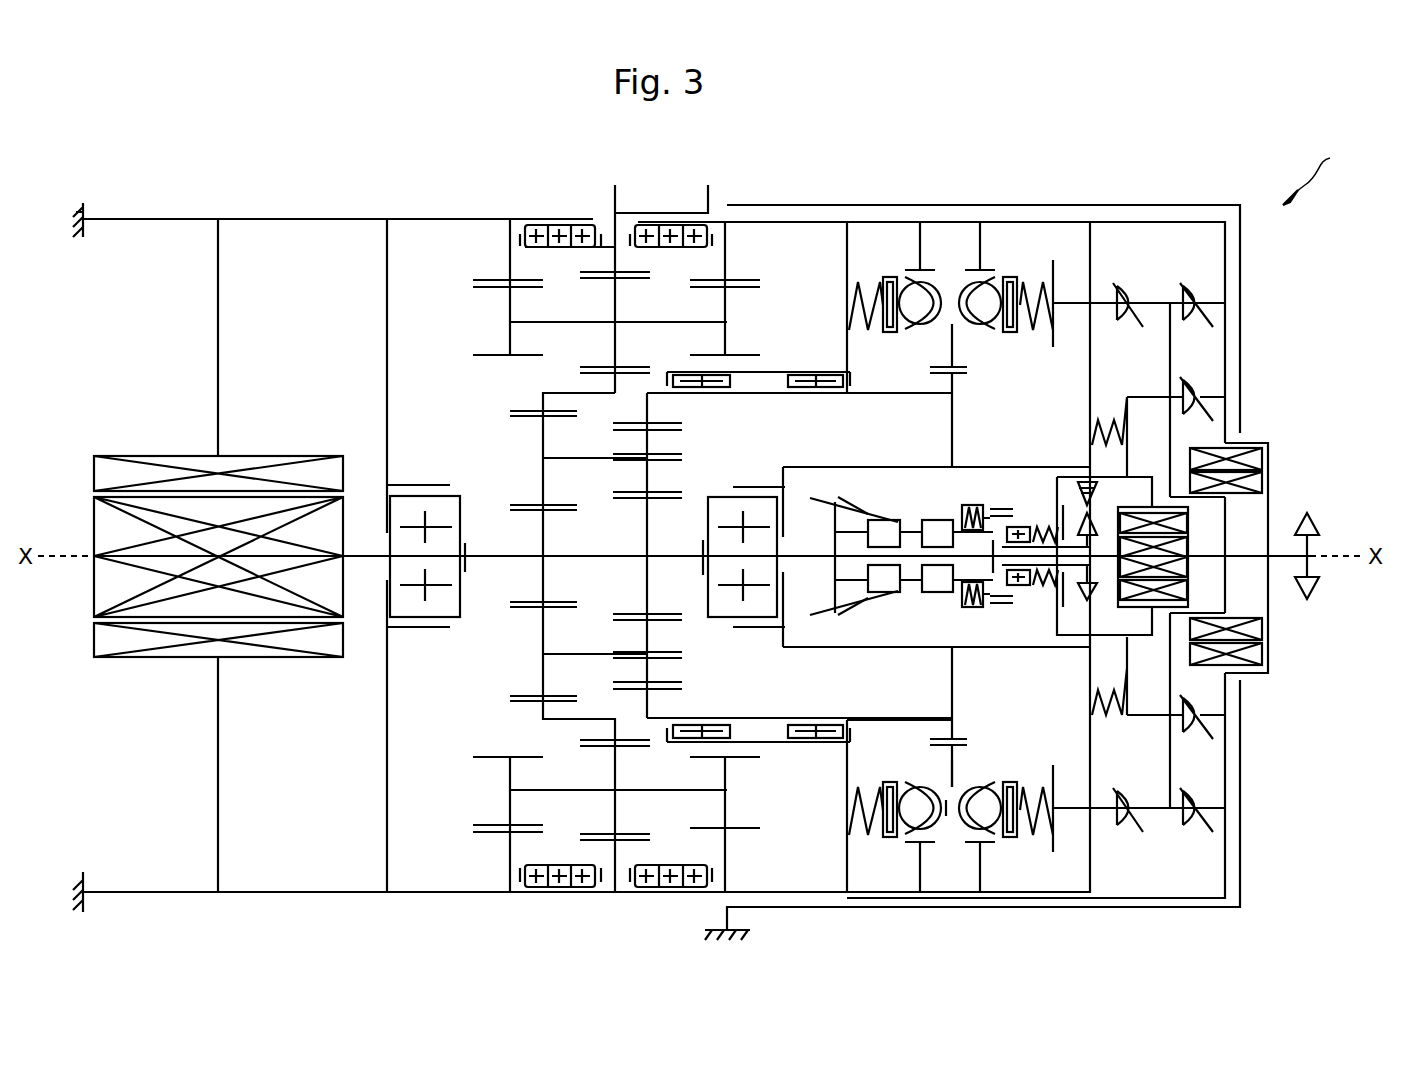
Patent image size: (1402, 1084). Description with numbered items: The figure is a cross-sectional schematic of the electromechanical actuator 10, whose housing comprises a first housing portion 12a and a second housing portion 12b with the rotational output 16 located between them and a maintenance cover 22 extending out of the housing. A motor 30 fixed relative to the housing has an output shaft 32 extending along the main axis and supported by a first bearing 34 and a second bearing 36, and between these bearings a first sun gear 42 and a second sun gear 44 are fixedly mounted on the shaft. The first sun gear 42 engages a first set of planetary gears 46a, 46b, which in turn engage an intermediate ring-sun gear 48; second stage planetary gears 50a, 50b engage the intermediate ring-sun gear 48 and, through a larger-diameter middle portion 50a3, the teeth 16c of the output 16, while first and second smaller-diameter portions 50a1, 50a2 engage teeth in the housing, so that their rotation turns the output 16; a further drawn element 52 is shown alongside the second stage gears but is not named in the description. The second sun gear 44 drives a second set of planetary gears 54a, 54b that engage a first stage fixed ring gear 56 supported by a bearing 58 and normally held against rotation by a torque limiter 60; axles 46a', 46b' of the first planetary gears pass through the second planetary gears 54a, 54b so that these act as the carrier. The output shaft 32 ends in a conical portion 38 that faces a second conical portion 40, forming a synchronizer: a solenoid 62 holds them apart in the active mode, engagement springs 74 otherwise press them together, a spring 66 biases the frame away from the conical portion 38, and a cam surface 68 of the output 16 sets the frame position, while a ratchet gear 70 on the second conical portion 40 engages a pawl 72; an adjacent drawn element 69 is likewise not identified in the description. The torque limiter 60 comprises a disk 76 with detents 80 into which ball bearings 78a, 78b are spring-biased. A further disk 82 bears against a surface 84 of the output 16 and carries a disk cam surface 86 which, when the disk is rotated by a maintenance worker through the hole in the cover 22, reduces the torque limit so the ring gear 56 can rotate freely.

The electromechanical actuator 10 is at (1320, 172).
The first housing portion 12a is at (290, 219).
The second housing portion 12b is at (995, 205).
The rotational output 16 is at (668, 212).
The teeth of the output 16c is at (630, 275).
The maintenance cover 22 is at (1268, 456).
The motor 30 is at (105, 598).
The output shaft 32 is at (500, 560).
The first bearing 34 is at (420, 615).
The second bearing 36 is at (720, 600).
The conical portion 38 is at (818, 497).
The second conical portion 40 is at (848, 497).
The first sun gear 42 is at (540, 522).
The second sun gear 44 is at (645, 517).
The first set of planetary gears 46a is at (512, 428).
The axle 46a' is at (560, 471).
The first set of planetary gears 46b is at (521, 679).
The axle 46b' is at (578, 612).
The intermediate ring-sun gear 48 is at (540, 397).
The second stage planetary gear 50a is at (611, 296).
The first smaller-diameter portion 50a1 is at (510, 334).
The second smaller-diameter portion 50a2 is at (728, 304).
The larger-diameter middle portion 50a3 is at (615, 296).
The second stage planetary gear 50b is at (617, 822).
The electric machine 52 is at (612, 865).
The second set of planetary gears 54a is at (650, 478).
The second set of planetary gears 54b is at (650, 664).
The first stage fixed ring gear 56 is at (788, 718).
The bearing 58 is at (806, 742).
The torque limiter 60 is at (958, 770).
The solenoid 62 is at (1180, 545).
The spring 66 is at (1120, 410).
The cam surface 68 is at (1200, 392).
The clutch 69 is at (1087, 492).
The ratchet gear 70 is at (1080, 605).
The pawl 72 is at (1074, 478).
The engagement springs 74 is at (1047, 590).
The disk 76 is at (948, 778).
The ball bearing 78a is at (910, 820).
The ball bearing 78b is at (992, 818).
The detents 80 is at (950, 825).
The disk 82 is at (1152, 302).
The surface 84 is at (1200, 298).
The disk cam surface 86 is at (1120, 292).